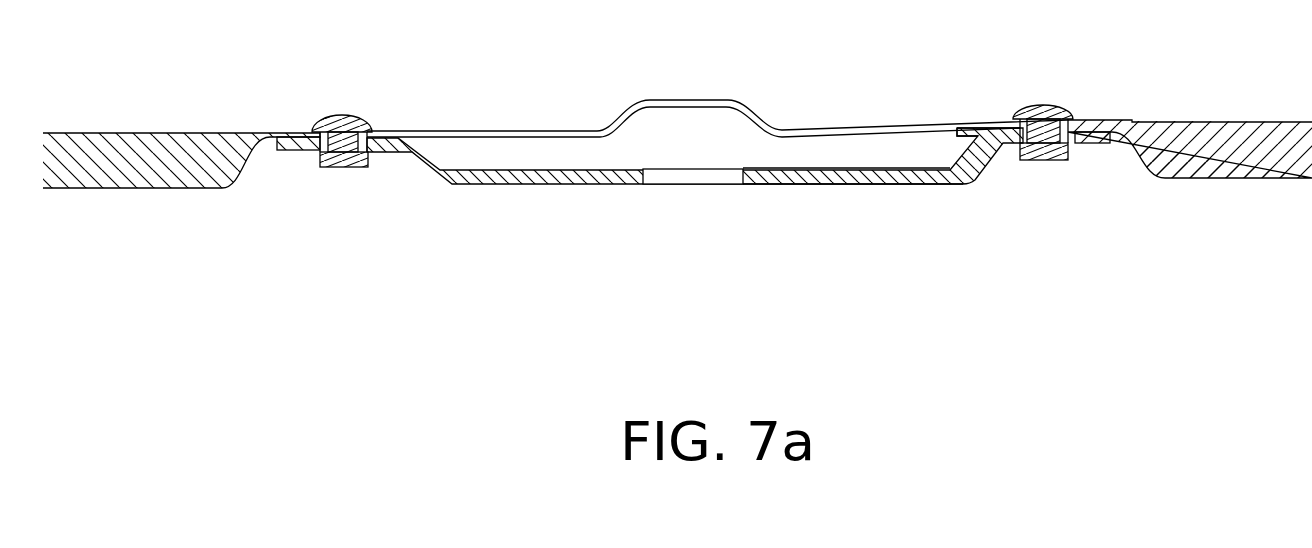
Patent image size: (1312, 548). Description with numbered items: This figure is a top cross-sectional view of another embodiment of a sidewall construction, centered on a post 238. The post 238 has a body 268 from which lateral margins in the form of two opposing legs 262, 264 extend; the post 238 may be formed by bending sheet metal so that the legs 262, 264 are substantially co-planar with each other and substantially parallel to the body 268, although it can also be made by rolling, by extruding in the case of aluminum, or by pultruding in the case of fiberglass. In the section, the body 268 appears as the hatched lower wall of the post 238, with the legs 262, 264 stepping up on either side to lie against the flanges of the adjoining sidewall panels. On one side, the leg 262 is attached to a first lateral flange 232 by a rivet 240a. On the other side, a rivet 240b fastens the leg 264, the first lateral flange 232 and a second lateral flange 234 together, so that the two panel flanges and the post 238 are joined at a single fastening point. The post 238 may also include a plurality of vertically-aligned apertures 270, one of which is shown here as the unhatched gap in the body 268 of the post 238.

The first lateral flange 232 is at (515, 132).
The second lateral flange 234 is at (958, 131).
The post 238 is at (507, 178).
The rivet 240a is at (354, 118).
The rivet 240b is at (1045, 108).
The leg 262 is at (298, 145).
The leg 264 is at (1094, 138).
The body 268 is at (912, 173).
The aperture 270 is at (693, 175).